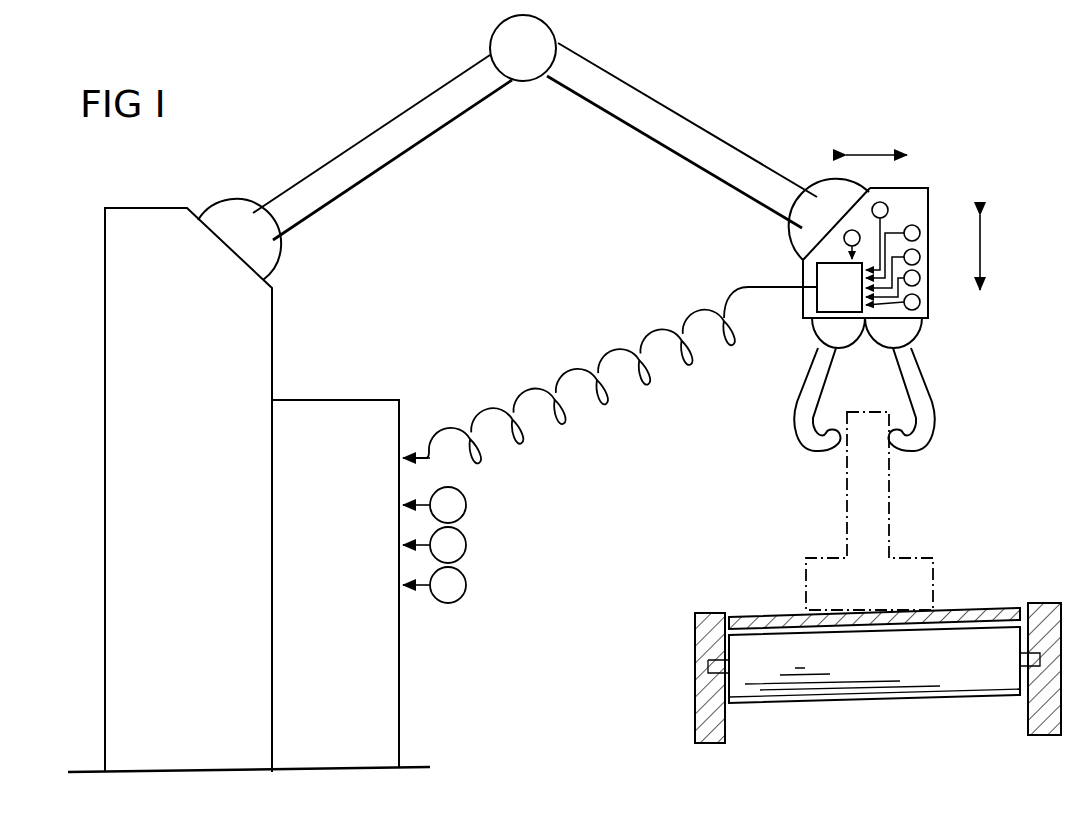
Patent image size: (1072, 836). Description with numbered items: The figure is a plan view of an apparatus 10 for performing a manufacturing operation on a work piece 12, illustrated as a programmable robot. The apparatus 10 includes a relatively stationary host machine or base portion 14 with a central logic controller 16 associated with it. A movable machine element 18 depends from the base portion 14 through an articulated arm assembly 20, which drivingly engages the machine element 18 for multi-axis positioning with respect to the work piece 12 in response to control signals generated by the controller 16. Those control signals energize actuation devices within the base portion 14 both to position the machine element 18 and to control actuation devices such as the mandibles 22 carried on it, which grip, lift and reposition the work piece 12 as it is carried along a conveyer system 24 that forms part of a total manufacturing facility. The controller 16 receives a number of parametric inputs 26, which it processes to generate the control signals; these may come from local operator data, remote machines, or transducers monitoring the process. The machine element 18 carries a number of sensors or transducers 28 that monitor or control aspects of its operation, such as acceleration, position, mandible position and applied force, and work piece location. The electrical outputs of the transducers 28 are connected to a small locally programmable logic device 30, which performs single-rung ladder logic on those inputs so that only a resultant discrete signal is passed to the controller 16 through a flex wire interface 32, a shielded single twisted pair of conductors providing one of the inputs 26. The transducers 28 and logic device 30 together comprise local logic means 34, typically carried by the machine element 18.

The apparatus 10 is at (732, 117).
The work piece 12 is at (890, 528).
The base portion 14 is at (258, 343).
The central logic controller 16 is at (373, 412).
The machine element 18 is at (918, 190).
The articulated arm assembly 20 is at (380, 132).
The mandibles 22 is at (800, 417).
The conveyer system 24 is at (993, 590).
The parametric inputs 26 is at (430, 458).
The sensors or transducers 28 is at (876, 203).
The locally programmable logic device 30 is at (823, 300).
The flex wire interface 32 is at (617, 349).
The local logic means 34 is at (783, 266).